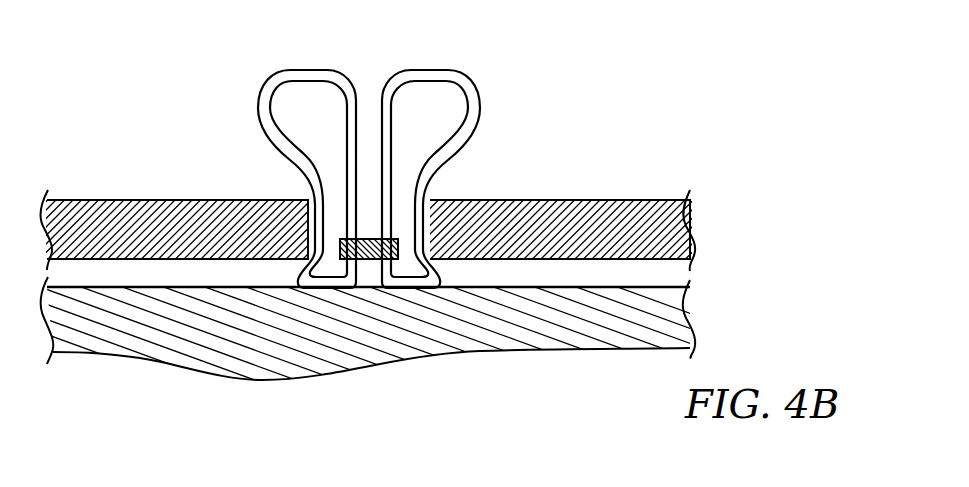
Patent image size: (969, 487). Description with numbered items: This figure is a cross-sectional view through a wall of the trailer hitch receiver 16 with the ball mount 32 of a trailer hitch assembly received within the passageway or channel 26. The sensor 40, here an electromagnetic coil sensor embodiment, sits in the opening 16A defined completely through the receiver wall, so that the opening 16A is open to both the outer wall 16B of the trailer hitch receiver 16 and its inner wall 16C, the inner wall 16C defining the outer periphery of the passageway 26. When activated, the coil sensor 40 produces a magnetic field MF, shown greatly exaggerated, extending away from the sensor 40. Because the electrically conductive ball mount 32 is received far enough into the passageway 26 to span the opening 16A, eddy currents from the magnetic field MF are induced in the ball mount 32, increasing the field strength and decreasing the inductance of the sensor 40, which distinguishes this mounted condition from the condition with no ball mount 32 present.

The trailer hitch receiver 16 is at (392, 191).
The opening 16A is at (308, 232).
The outer wall 16B is at (548, 198).
The inner wall 16C is at (676, 260).
The passageway or channel 26 is at (88, 274).
The ball mount 32 is at (667, 323).
The sensor 40 is at (370, 238).
The magnetic field MF is at (268, 88).